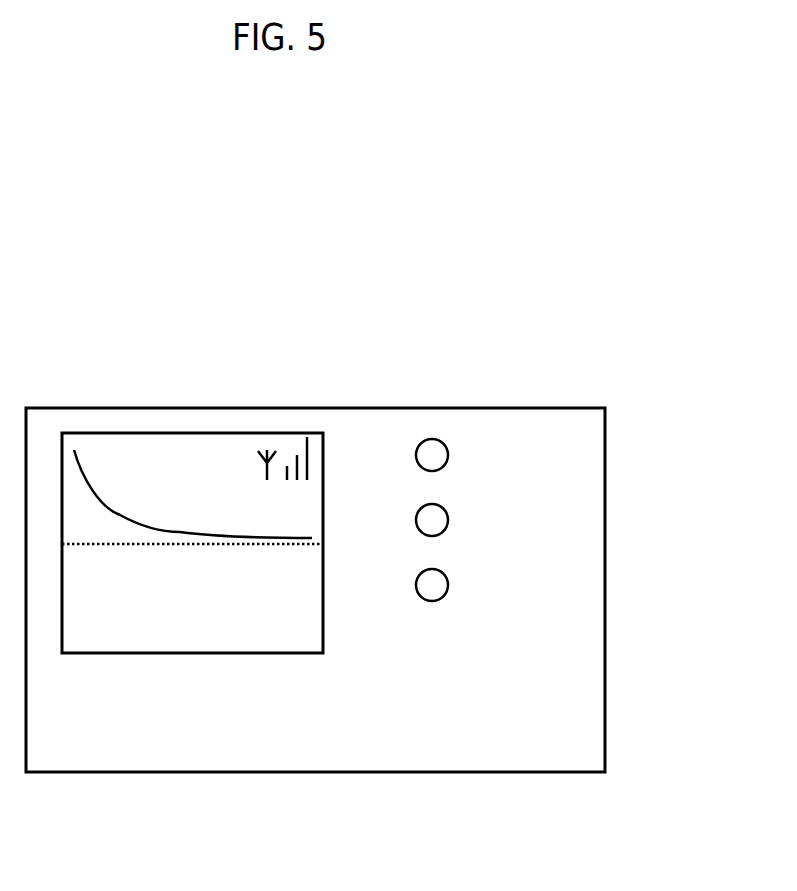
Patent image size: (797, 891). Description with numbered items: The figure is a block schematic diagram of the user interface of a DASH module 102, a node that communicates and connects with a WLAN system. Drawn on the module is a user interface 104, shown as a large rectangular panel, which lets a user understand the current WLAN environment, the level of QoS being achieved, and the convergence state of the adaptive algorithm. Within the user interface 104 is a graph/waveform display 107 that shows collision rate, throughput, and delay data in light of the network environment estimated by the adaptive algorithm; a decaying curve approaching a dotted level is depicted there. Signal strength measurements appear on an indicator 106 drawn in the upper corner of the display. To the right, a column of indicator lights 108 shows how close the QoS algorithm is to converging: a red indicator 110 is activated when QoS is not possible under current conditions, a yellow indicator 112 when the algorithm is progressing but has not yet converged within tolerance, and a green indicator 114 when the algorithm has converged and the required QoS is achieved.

The DASH module 102 is at (570, 318).
The user interface 104 is at (192, 412).
The indicator 106 is at (250, 470).
The graph/waveform display 107 is at (205, 655).
The indicator lights 108 is at (464, 634).
The red indicator 110 is at (415, 460).
The yellow indicator 112 is at (415, 525).
The green indicator 114 is at (415, 590).